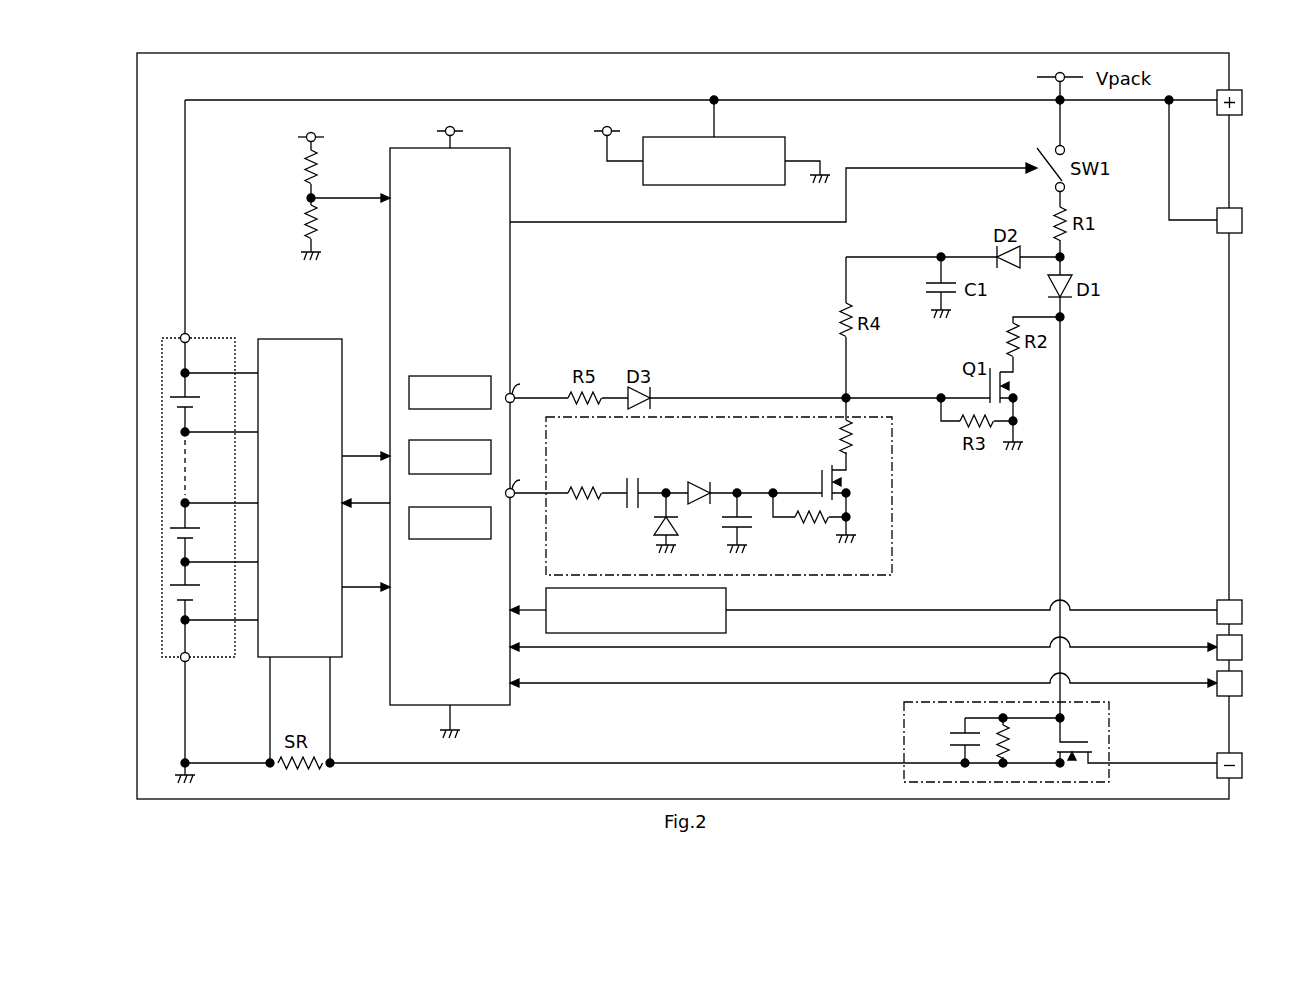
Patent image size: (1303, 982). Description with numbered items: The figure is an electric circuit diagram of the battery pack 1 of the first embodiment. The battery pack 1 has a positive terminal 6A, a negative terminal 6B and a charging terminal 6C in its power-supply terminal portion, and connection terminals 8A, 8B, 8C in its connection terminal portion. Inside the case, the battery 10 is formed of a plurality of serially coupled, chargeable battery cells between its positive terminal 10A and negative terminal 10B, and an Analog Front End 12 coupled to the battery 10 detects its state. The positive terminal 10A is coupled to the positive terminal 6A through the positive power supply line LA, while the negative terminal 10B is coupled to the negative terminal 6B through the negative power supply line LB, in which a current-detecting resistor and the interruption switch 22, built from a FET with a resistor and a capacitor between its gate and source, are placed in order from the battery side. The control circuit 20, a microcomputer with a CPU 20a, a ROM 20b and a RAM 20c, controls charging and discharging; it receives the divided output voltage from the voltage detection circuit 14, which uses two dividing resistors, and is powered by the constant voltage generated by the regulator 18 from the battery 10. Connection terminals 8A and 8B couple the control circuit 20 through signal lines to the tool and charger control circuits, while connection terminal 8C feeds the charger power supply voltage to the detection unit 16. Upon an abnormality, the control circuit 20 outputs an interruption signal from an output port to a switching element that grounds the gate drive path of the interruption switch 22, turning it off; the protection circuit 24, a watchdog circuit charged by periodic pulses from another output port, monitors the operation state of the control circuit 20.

The battery pack 1 is at (190, 86).
The battery 10 is at (175, 333).
The positive terminal of the battery 10A is at (188, 335).
The negative terminal of the battery 10B is at (188, 660).
The Analog Front End (AFE) 12 is at (304, 339).
The voltage detection circuit 14 is at (285, 195).
The detection unit 16 is at (726, 628).
The regulator 18 is at (756, 137).
The control circuit 20 is at (395, 148).
The CPU 20a is at (450, 376).
The ROM 20b is at (450, 440).
The RAM 20c is at (450, 507).
The interruption switch 22 is at (1110, 729).
The protection circuit 24 is at (895, 490).
The positive terminal 6A is at (1246, 102).
The negative terminal 6B is at (1246, 765).
The charging terminal 6C is at (1246, 220).
The connection terminal 8A is at (1246, 683).
The connection terminal 8B is at (1246, 647).
The connection terminal 8C is at (1246, 612).